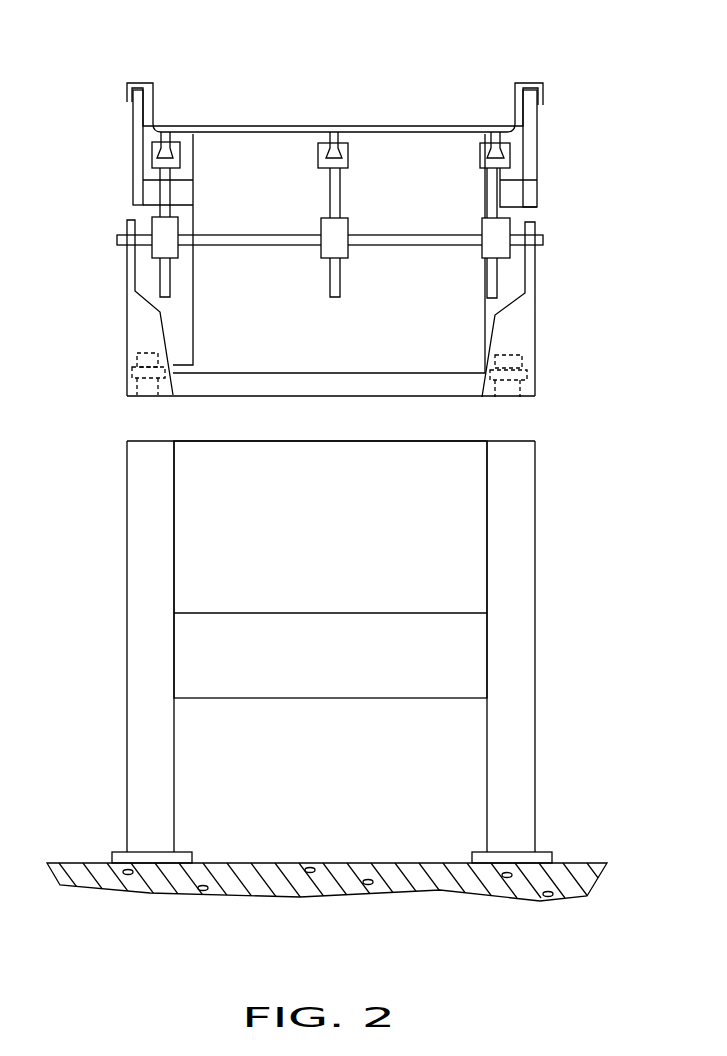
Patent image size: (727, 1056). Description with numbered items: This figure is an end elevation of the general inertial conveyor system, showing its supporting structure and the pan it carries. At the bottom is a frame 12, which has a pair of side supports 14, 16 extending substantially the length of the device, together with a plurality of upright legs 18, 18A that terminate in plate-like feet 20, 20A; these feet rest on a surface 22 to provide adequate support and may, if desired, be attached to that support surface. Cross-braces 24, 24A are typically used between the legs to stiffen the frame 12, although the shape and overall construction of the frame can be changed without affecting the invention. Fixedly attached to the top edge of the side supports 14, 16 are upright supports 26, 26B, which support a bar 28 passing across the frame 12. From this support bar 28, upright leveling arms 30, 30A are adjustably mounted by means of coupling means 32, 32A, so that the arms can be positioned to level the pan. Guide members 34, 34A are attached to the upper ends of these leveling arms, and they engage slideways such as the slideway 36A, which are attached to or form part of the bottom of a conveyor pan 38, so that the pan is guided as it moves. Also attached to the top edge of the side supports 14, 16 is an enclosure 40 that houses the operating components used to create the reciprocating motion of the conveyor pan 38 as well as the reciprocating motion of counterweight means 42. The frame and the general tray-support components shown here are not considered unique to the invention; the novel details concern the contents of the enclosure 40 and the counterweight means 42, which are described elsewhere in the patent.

The frame 12 is at (118, 552).
The side support 14 is at (127, 422).
The side support 16 is at (537, 468).
The upright leg 18 is at (127, 665).
The upright leg 18A is at (537, 572).
The plate-like foot 20 is at (112, 852).
The plate-like foot 20A is at (552, 852).
The surface 22 is at (318, 870).
The cross-brace 24 is at (268, 441).
The cross-brace 24A is at (317, 613).
The upright support 26 is at (127, 300).
The upright support 26B is at (537, 313).
The support bar 28 is at (272, 247).
The leveling arm 30 is at (160, 191).
The leveling arm 30A is at (340, 185).
The coupling means 32 is at (178, 228).
The coupling means 32A is at (345, 258).
The guide member 34 is at (152, 155).
The guide member 34A is at (350, 149).
The slideway 36A is at (322, 137).
The conveyor pan 38 is at (162, 87).
The enclosure 40 is at (313, 342).
The counterweight means 42 is at (124, 141).